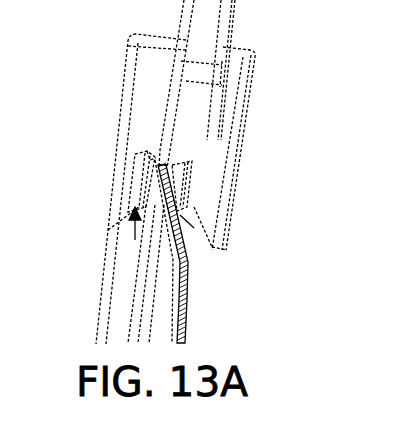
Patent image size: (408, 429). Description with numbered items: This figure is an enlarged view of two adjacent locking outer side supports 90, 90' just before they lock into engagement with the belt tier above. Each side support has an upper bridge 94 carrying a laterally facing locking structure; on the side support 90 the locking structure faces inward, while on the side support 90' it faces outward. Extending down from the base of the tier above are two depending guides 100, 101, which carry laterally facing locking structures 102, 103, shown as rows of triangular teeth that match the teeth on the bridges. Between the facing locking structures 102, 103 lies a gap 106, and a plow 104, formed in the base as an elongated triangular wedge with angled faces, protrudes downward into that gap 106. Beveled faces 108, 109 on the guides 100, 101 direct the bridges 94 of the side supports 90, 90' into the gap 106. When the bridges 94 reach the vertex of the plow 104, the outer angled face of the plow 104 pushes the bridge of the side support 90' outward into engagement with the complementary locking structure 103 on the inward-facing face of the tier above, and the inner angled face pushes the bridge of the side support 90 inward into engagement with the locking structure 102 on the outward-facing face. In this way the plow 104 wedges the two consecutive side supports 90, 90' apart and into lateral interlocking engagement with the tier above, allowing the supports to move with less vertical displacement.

The outer side support 90 is at (119, 189).
The outer side support 90' is at (202, 251).
The upper bridge 94 is at (151, 156).
The depending guide 100 is at (115, 208).
The depending guide 101 is at (210, 230).
The locking structure 102 is at (137, 182).
The locking structure 103 is at (197, 185).
The plow 104 is at (163, 163).
The gap 106 is at (135, 240).
The beveled face 108 is at (108, 230).
The beveled face 109 is at (194, 232).